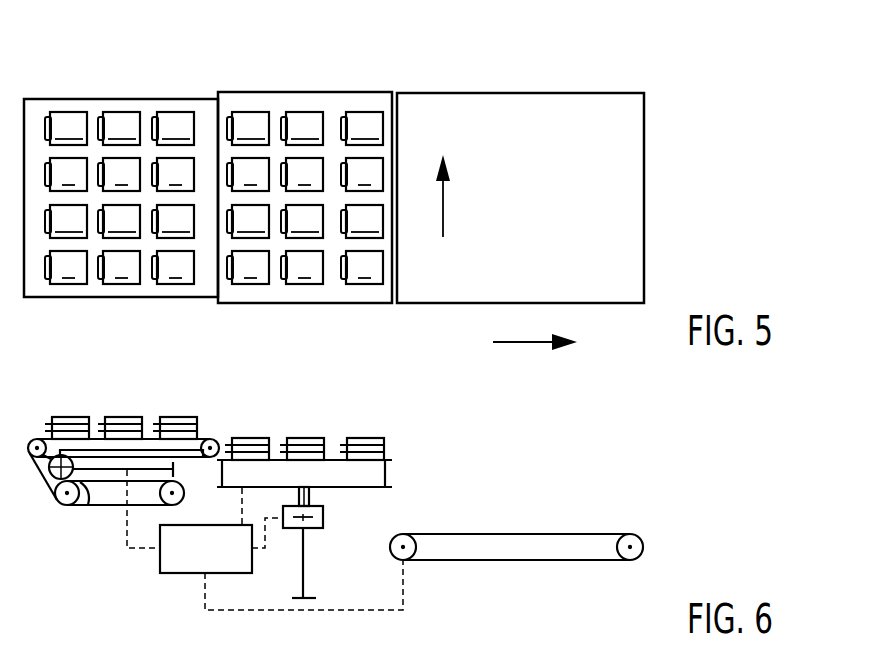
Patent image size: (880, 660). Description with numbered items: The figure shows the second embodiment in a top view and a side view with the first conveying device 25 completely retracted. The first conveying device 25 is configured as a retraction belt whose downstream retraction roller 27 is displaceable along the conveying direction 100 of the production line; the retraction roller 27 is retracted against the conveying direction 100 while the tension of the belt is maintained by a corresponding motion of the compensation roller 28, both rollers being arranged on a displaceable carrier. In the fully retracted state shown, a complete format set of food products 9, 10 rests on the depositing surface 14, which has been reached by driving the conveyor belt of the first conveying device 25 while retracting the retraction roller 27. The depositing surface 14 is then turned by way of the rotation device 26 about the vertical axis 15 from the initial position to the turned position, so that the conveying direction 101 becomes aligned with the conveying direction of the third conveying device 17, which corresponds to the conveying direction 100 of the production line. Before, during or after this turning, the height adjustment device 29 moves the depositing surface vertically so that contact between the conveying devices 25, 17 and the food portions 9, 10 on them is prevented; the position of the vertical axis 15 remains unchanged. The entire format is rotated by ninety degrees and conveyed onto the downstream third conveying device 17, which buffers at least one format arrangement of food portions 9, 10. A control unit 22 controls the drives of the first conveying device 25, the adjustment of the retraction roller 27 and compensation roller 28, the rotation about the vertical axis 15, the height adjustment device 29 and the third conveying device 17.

In FIG. 5, the food product 9 is at (214, 221).
In FIG. 6, the food product 9 is at (61, 417).
In FIG. 5, the food product 10 is at (214, 175).
In FIG. 6, the depositing surface 14 is at (338, 466).
In FIG. 6, the vertical axis 15 is at (309, 492).
In FIG. 5, the third conveying device 17 is at (517, 82).
In FIG. 6, the third conveying device 17 is at (517, 518).
In FIG. 6, the control unit 22 is at (191, 561).
In FIG. 5, the first conveying device 25 is at (124, 88).
In FIG. 6, the first conveying device 25 is at (130, 443).
In FIG. 5, the rotation device 26 is at (301, 82).
In FIG. 6, the rotation device 26 is at (320, 433).
In FIG. 6, the retraction roller 27 is at (210, 438).
In FIG. 6, the compensation roller 28 is at (87, 507).
In FIG. 6, the height adjustment device 29 is at (306, 556).
In FIG. 5, the conveying direction 100 is at (535, 356).
In FIG. 5, the conveying direction 101 is at (427, 196).